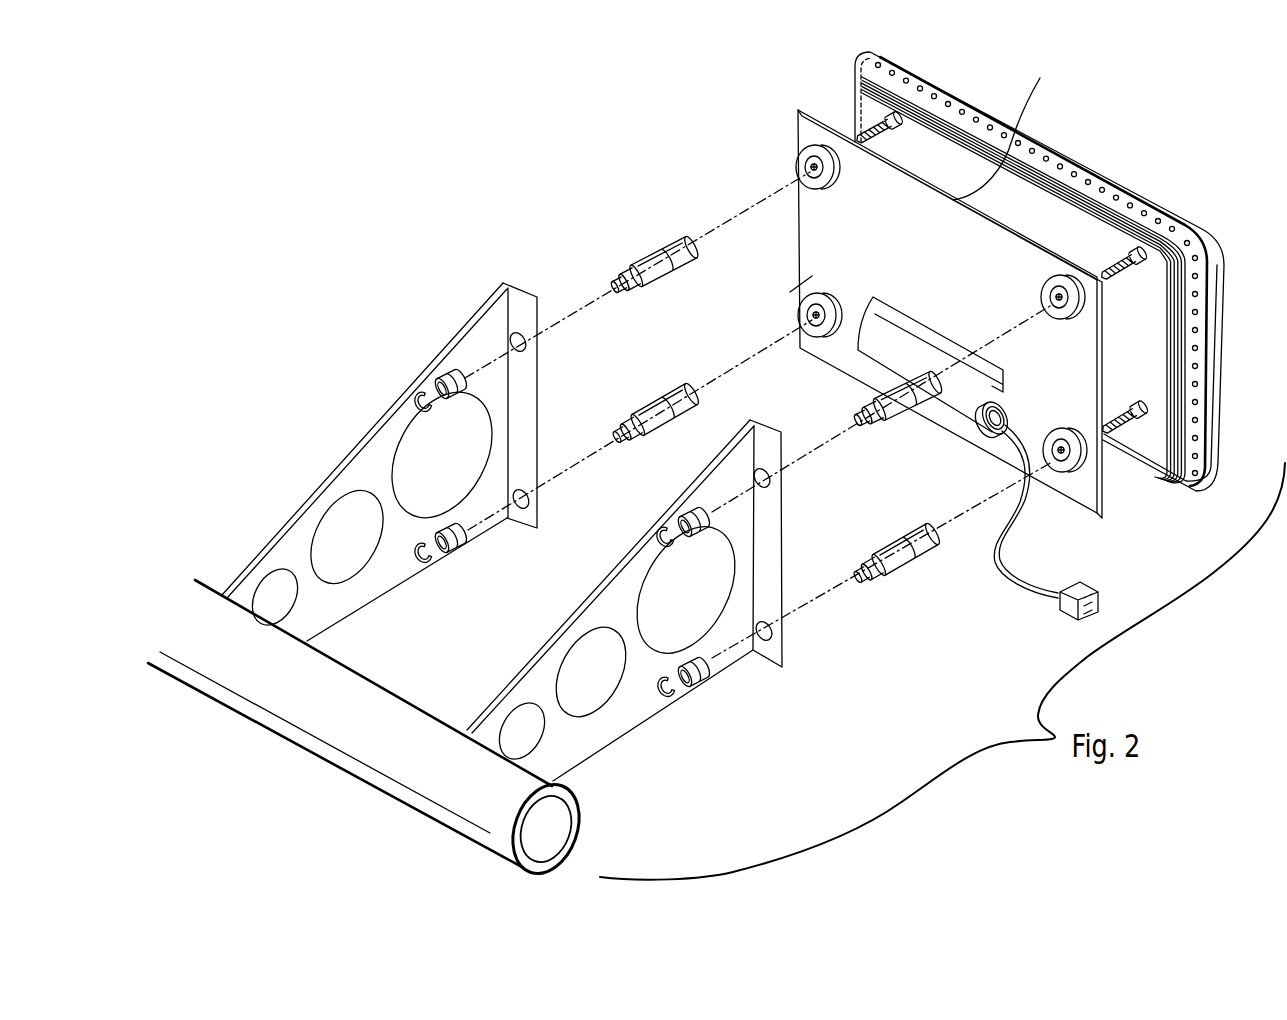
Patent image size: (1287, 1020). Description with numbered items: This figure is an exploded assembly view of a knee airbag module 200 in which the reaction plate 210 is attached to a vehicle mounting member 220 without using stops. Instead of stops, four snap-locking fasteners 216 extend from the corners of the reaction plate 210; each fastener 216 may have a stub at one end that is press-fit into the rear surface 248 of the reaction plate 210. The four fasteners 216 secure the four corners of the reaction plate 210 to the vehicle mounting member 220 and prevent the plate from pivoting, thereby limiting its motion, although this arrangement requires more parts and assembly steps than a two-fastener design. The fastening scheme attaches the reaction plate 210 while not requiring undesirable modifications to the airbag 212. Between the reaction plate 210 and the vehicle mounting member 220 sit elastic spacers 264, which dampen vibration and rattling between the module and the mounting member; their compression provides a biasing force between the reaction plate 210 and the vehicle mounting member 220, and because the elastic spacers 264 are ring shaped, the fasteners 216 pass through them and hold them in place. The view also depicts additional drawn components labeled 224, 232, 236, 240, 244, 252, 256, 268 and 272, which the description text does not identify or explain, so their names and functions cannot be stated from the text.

The airbag module 200 is at (466, 158).
The reaction plate 210 is at (950, 276).
The airbag 212 is at (866, 104).
The snap-locking fastener 216 is at (808, 140).
The vehicle mounting member 220 is at (256, 408).
The frame bezel 224 is at (1075, 158).
The screws 232 is at (892, 108).
The sensors 236 is at (655, 252).
The nuts 240 is at (452, 372).
The retaining rings 244 is at (415, 396).
The rear surface 248 is at (800, 287).
The lens cover 252 is at (1015, 130).
The bracket flange 256 is at (522, 413).
The elastic spacer 264 is at (806, 170).
The flange holes 268 is at (520, 333).
The rail with bushing and cable 272 is at (862, 360).